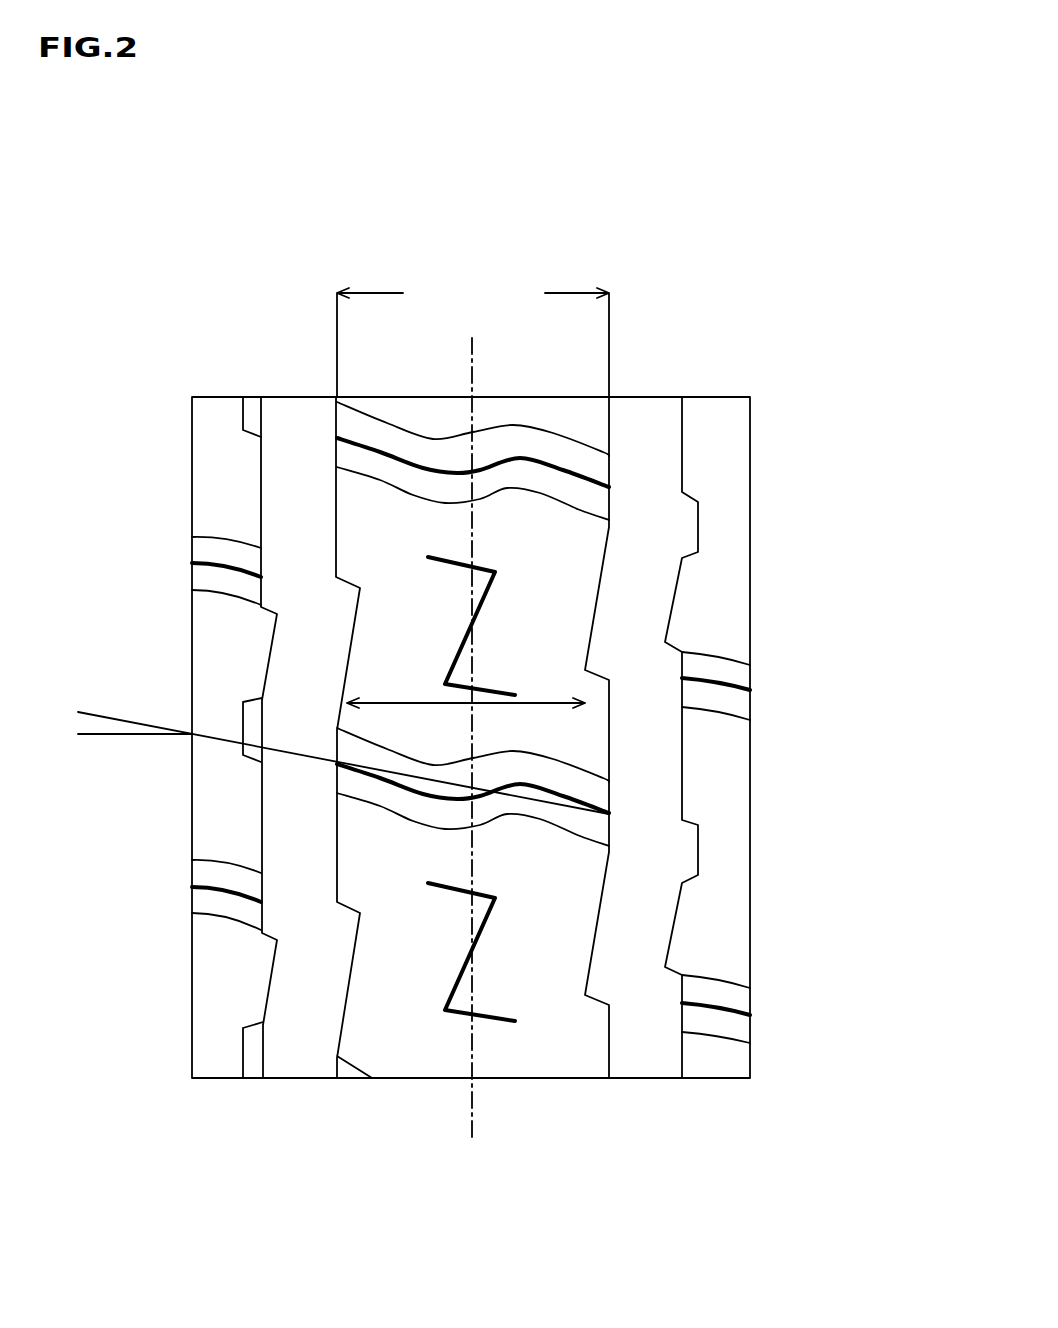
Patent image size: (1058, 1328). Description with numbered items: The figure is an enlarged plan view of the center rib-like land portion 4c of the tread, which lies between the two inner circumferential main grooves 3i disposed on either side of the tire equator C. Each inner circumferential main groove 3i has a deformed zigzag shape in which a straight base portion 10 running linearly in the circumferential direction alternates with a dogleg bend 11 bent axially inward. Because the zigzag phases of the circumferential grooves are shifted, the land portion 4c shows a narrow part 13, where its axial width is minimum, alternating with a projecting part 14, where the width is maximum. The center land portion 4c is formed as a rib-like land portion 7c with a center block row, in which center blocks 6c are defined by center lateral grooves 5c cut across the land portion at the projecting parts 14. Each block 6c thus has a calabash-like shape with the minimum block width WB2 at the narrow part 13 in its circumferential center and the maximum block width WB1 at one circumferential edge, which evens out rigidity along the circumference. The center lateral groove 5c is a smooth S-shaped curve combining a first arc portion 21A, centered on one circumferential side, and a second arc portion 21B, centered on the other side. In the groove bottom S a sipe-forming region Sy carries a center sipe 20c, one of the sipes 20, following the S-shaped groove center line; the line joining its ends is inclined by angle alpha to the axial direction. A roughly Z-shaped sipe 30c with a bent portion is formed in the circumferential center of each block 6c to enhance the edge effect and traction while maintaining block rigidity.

The inner circumferential main groove 3i is at (295, 1063).
The center rib-like land portion 4c is at (472, 807).
The rib-like land portion with a center block row 7c is at (472, 737).
The center block 6c is at (429, 635).
The center lateral groove 5c is at (573, 554).
The center sipe 20c is at (625, 554).
The sipe 20 is at (573, 554).
The first arc portion 21A is at (592, 445).
The second arc portion 21B is at (382, 425).
The groove bottom S is at (418, 561).
The sipe-forming region Sy is at (347, 457).
The sipe having a bent portion 30c is at (427, 565).
The straight base portion 10 is at (288, 833).
The dogleg bend 11 is at (308, 967).
The narrow part 13 is at (617, 540).
The projecting part 14 is at (617, 713).
The tire equator C is at (473, 1053).
The maximum block width WB1 is at (473, 337).
The minimum block width WB2 is at (530, 704).